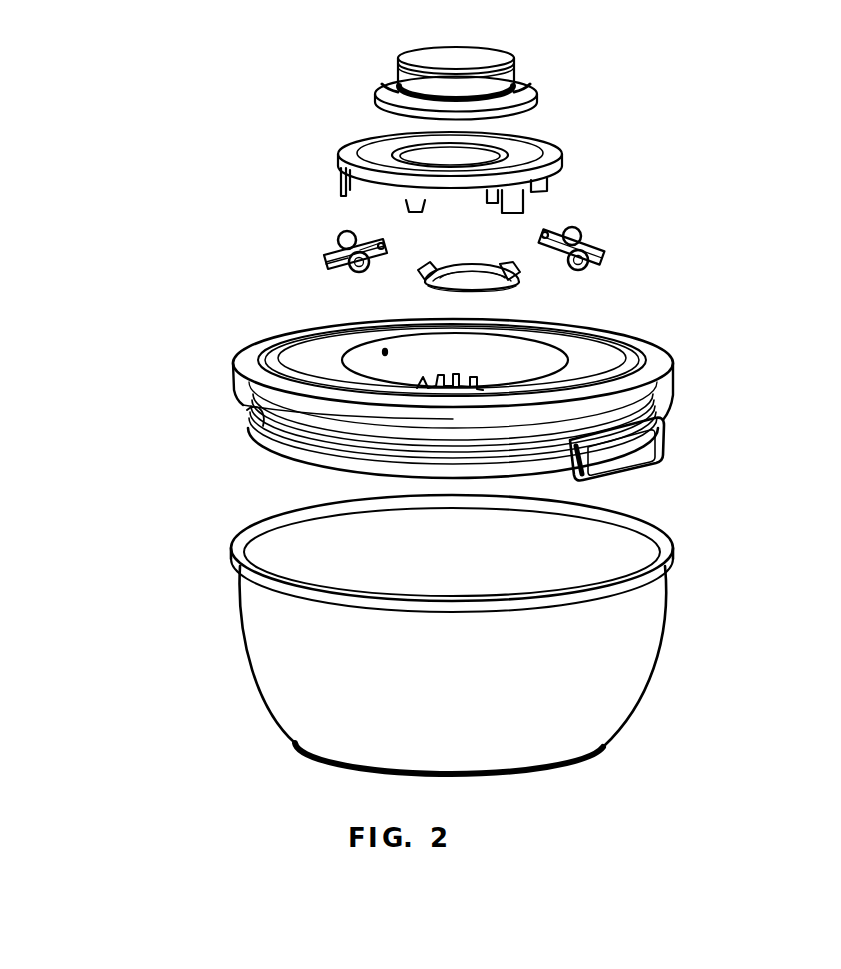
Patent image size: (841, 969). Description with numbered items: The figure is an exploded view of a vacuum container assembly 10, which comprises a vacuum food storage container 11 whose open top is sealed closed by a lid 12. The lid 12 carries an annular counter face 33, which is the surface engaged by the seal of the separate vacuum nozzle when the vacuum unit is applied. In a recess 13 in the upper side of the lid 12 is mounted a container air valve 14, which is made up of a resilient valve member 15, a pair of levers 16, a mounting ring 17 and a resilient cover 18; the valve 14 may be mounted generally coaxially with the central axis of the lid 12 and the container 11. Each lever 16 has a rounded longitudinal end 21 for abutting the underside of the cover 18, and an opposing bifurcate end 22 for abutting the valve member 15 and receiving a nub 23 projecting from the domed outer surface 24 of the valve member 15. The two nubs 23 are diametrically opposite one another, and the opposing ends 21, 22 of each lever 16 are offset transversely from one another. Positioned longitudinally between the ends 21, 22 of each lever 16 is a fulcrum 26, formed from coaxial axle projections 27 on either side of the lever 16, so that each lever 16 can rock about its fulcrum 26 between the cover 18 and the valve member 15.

The vacuum container assembly 10 is at (764, 103).
The vacuum food storage container 11 is at (685, 641).
The lid 12 is at (692, 410).
The recess 13 is at (372, 352).
The container air valve 14 is at (188, 166).
The valve member 15 is at (525, 293).
The lever 16 is at (314, 254).
The mounting ring 17 is at (566, 152).
The resilient cover 18 is at (460, 58).
The longitudinal end 21 is at (378, 238).
The opposing end 22 is at (330, 272).
The nub 23 is at (430, 266).
The domed outer surface 24 is at (478, 270).
The fulcrum 26 is at (324, 235).
The axle projection 27 is at (347, 233).
The annular counter face 33 is at (313, 363).